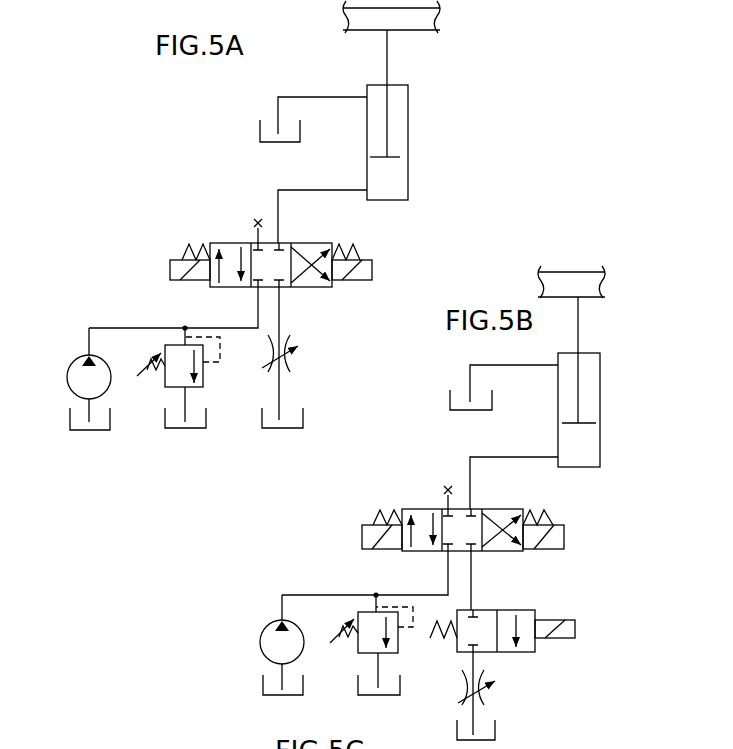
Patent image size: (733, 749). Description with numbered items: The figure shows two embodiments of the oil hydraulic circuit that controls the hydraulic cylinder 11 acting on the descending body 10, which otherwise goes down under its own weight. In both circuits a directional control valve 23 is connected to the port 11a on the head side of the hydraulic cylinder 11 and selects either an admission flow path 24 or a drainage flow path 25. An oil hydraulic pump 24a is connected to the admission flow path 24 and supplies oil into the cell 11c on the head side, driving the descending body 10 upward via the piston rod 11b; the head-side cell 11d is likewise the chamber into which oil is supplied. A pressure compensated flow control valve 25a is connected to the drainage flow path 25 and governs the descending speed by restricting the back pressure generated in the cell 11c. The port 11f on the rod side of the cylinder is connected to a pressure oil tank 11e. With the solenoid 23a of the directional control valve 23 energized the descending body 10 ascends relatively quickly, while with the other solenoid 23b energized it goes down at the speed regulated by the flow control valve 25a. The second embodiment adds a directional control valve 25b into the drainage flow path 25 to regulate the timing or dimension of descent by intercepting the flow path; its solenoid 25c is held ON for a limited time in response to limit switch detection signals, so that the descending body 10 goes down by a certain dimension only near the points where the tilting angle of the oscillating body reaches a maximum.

In FIG. 5A, the descending body 10 is at (412, 25).
In FIG. 5B, the descending body 10 is at (571, 282).
In FIG. 5A, the hydraulic cylinder 11 is at (411, 131).
In FIG. 5B, the hydraulic cylinder 11 is at (603, 386).
In FIG. 5A, the port on the head side 11a is at (366, 192).
In FIG. 5A, the piston rod 11b is at (389, 57).
In FIG. 5A, the cell on the head side 11c is at (402, 172).
In FIG. 5B, the cell on the head side 11c is at (590, 446).
In FIG. 5A, the cell on the head side 11d is at (397, 100).
In FIG. 5A, the pressure oil tank 11e is at (258, 138).
In FIG. 5A, the port on the rod side 11f is at (366, 94).
In FIG. 5A, the directional control valve 23 is at (237, 241).
In FIG. 5B, the directional control valve 23 is at (419, 505).
In FIG. 5A, the solenoid 23a is at (373, 272).
In FIG. 5A, the solenoid 23b is at (169, 270).
In FIG. 5A, the admission flow path 24 is at (167, 321).
In FIG. 5B, the admission flow path 24 is at (343, 592).
In FIG. 5A, the oil hydraulic pump 24a is at (69, 380).
In FIG. 5A, the drainage flow path 25 is at (318, 297).
In FIG. 5B, the drainage flow path 25 is at (478, 578).
In FIG. 5A, the pressure compensated flow control valve 25a is at (294, 360).
In FIG. 5B, the pressure compensated flow control valve 25a is at (490, 698).
In FIG. 5B, the directional control valve 25b is at (522, 610).
In FIG. 5B, the solenoid 25c is at (575, 632).